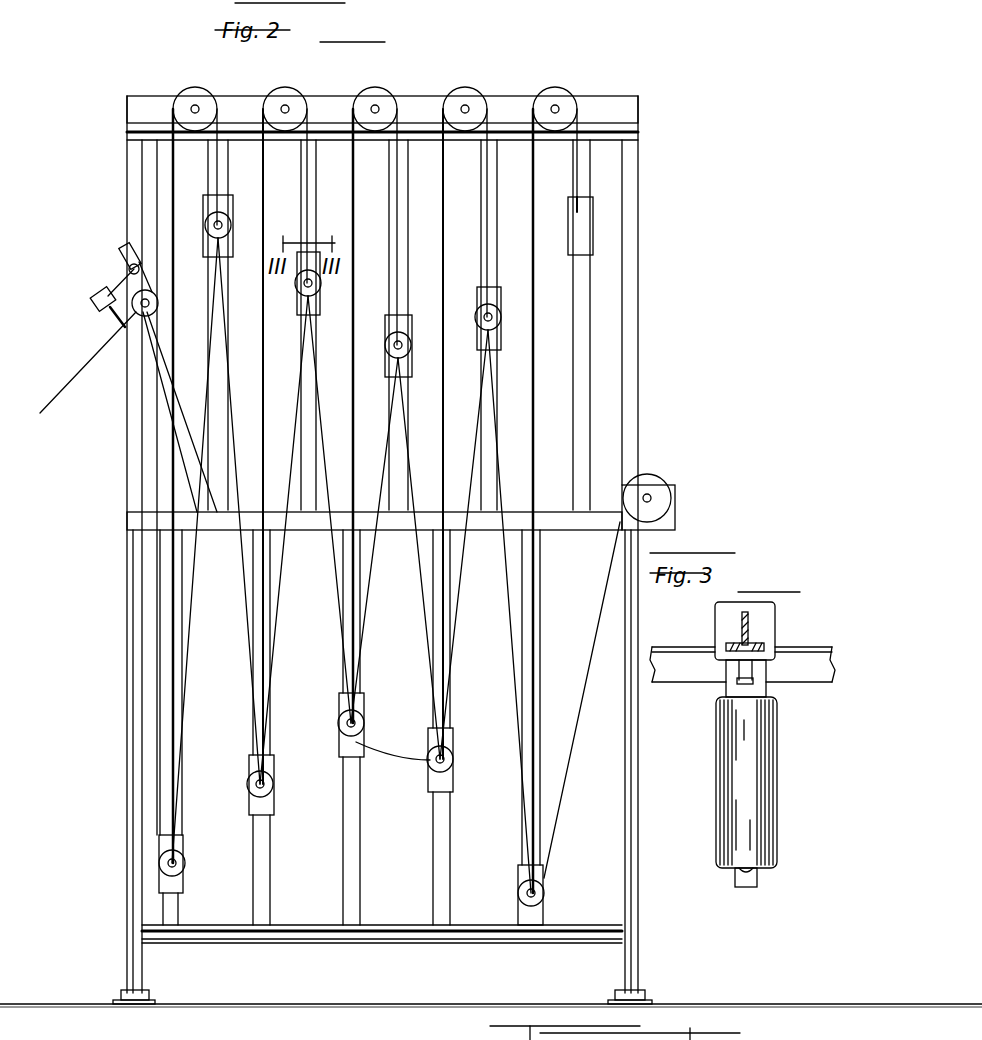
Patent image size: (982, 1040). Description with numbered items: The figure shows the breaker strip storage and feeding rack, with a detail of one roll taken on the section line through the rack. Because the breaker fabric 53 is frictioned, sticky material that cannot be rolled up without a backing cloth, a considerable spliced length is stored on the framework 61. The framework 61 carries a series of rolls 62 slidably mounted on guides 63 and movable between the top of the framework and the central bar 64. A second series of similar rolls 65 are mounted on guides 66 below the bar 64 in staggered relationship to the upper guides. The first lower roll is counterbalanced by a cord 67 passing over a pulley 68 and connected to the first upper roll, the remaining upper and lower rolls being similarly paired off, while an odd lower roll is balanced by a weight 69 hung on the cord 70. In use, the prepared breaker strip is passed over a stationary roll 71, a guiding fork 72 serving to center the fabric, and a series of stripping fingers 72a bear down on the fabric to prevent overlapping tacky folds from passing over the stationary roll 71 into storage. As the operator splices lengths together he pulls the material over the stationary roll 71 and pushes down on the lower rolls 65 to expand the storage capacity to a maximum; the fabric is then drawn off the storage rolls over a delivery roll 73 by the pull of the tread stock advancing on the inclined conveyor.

In FIG. 2, the breaker fabric 53 is at (562, 818).
In FIG. 2, the framework 61 is at (635, 337).
In FIG. 2, the rolls 62 is at (222, 236).
In FIG. 3, the rolls 62 is at (765, 800).
In FIG. 2, the guides 63 is at (215, 372).
In FIG. 3, the guides 63 is at (750, 645).
In FIG. 2, the central bar 64 is at (552, 522).
In FIG. 3, the central bar 64 is at (815, 668).
In FIG. 2, the rolls 65 is at (183, 865).
In FIG. 2, the guides 66 is at (268, 688).
In FIG. 2, the cord 67 is at (172, 177).
In FIG. 2, the pulley 68 is at (215, 97).
In FIG. 2, the weight 69 is at (585, 238).
In FIG. 2, the cord 70 is at (576, 177).
In FIG. 2, the stationary roll 71 is at (150, 291).
In FIG. 2, the guiding fork 72 is at (100, 312).
In FIG. 2, the stripping fingers 72a is at (130, 256).
In FIG. 2, the delivery roll 73 is at (660, 484).